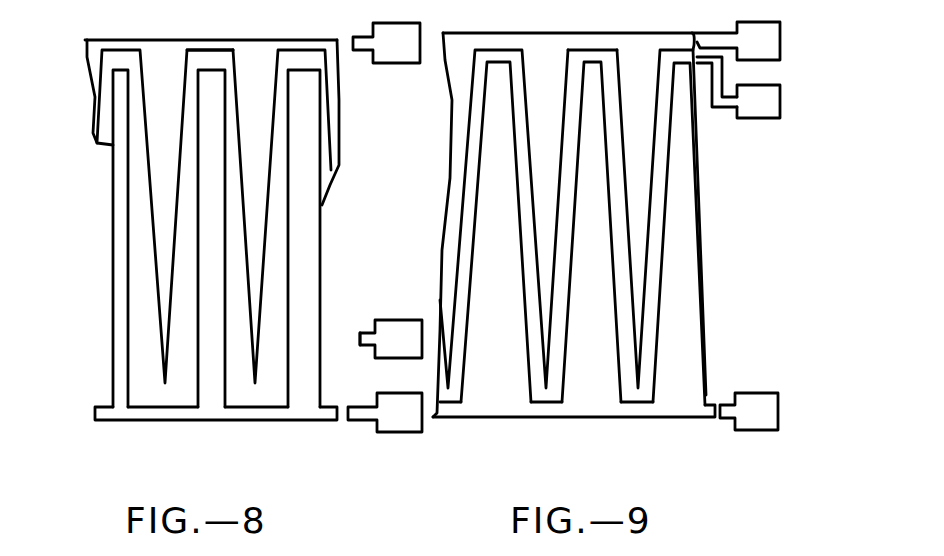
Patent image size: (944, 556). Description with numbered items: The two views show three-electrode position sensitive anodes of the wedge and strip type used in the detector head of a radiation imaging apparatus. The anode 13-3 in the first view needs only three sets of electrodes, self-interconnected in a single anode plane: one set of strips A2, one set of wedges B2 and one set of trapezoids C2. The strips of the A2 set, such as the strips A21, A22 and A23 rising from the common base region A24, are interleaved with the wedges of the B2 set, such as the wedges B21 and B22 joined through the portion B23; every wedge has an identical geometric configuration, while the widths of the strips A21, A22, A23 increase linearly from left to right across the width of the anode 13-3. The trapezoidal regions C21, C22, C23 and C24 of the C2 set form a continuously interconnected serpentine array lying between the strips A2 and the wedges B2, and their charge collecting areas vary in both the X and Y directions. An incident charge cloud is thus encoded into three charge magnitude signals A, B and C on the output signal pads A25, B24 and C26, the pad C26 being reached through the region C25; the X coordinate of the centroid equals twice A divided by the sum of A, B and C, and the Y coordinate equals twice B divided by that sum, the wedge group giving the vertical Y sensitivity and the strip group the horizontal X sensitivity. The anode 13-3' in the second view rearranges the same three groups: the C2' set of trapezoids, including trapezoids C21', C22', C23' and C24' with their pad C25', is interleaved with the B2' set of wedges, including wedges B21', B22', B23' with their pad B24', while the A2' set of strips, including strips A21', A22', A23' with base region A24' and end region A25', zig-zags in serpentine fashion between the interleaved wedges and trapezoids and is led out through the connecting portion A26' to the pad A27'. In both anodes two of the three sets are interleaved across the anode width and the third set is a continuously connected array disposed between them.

In FIG. 8, the set of wedges B2 is at (211, 20).
In FIG. 8, the second electrode first tooth B21 is at (165, 192).
In FIG. 8, the second electrode second tooth B22 is at (282, 192).
In FIG. 8, the second electrode flat portion B23 is at (228, 25).
In FIG. 8, the output signal pad B24 is at (391, 32).
In FIG. 8, the set of strips A2 is at (216, 439).
In FIG. 8, the strip A21 is at (108, 271).
In FIG. 8, the strip A22 is at (186, 271).
In FIG. 8, the strip A23 is at (295, 271).
In FIG. 8, the first electrode base portion A24 is at (208, 424).
In FIG. 8, the output signal pad A25 is at (385, 432).
In FIG. 8, the set of trapezoids C2 is at (322, 269).
In FIG. 8, the first gap C21 is at (95, 292).
In FIG. 8, the second gap C22 is at (119, 314).
In FIG. 8, the third gap C23 is at (302, 212).
In FIG. 8, the fourth gap C24 is at (322, 237).
In FIG. 8, the pad gap C25 is at (348, 327).
In FIG. 8, the output signal pad C26 is at (387, 333).
In FIG. 8, the position sensitive anode 13-3 is at (67, 226).
In FIG. 9, the set of wedges B2' is at (568, 26).
In FIG. 9, the second electrode first tooth B21' is at (504, 195).
In FIG. 9, the second electrode second tooth B22' is at (661, 198).
In FIG. 9, the second electrode flat portion B23' is at (601, 26).
In FIG. 9, the second electrode terminal pad B24' is at (736, 31).
In FIG. 9, the set of strips A2' is at (555, 308).
In FIG. 9, the first electrode first finger A21' is at (458, 232).
In FIG. 9, the first electrode second finger A22' is at (523, 266).
In FIG. 9, the first electrode third finger A23' is at (630, 267).
In FIG. 9, the first electrode base portion A24' is at (557, 409).
In FIG. 9, the first electrode end portion A25' is at (696, 416).
In FIG. 9, the connecting strip A26' is at (725, 103).
In FIG. 9, the terminal pad A27' is at (754, 128).
In FIG. 9, the set of trapezoids C2' is at (516, 433).
In FIG. 9, the first gap C21' is at (459, 401).
In FIG. 9, the second gap C22' is at (685, 321).
In FIG. 9, the third gap C23' is at (726, 297).
In FIG. 9, the fourth gap C24' is at (522, 416).
In FIG. 9, the pad C25' is at (749, 391).
In FIG. 9, the capacitive element 13-3' is at (735, 229).